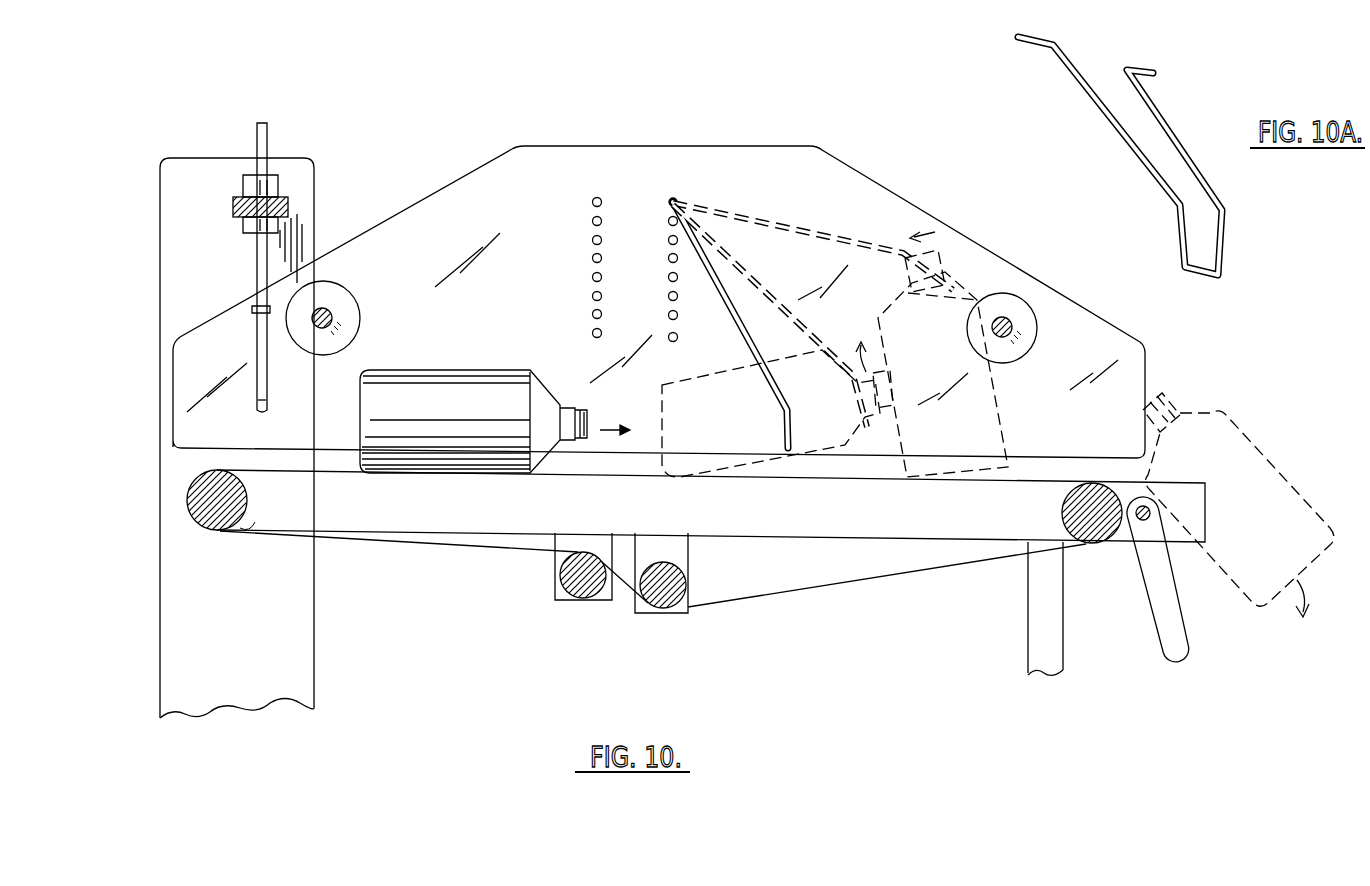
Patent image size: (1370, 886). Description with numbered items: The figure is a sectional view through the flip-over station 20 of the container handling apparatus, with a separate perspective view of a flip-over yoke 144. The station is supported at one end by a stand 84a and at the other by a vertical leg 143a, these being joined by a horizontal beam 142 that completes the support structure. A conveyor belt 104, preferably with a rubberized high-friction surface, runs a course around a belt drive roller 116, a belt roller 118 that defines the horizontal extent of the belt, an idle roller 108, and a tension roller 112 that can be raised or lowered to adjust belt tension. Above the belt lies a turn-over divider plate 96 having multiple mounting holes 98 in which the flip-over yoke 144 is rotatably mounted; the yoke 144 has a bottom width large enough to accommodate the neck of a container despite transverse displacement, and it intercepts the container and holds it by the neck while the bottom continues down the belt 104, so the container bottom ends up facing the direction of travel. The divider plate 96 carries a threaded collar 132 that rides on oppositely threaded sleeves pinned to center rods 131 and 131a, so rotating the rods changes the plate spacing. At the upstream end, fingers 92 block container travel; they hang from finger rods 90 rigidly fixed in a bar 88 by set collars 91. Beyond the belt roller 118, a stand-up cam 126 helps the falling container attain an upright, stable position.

In FIG. 10, the flip-over station 20 is at (683, 122).
In FIG. 10, the stand 84a is at (183, 291).
In FIG. 10, the bar 88 is at (272, 210).
In FIG. 10, the finger rod 90 is at (258, 253).
In FIG. 10, the set collar 91 is at (265, 187).
In FIG. 10, the finger 92 is at (262, 385).
In FIG. 10, the turn-over divider plate 96 is at (967, 262).
In FIG. 10, the mounting hole 98 is at (598, 256).
In FIG. 10, the conveyor belt 104 is at (478, 545).
In FIG. 10, the idle roller 108 is at (660, 590).
In FIG. 10, the tension roller 112 is at (578, 572).
In FIG. 10, the belt drive roller 116 is at (208, 498).
In FIG. 10, the belt roller 118 is at (1088, 507).
In FIG. 10, the stand-up cam 126 is at (1180, 630).
In FIG. 10, the center rod 131 is at (325, 315).
In FIG. 10, the center rod 131a is at (1012, 322).
In FIG. 10, the threaded collar 132 is at (349, 331).
In FIG. 10, the horizontal beam 142 is at (815, 520).
In FIG. 10, the vertical leg 143a is at (1045, 637).
In FIG. 10, the flip-over yoke 144 is at (805, 230).
In FIG. 10A, the flip-over yoke 144 is at (1120, 137).